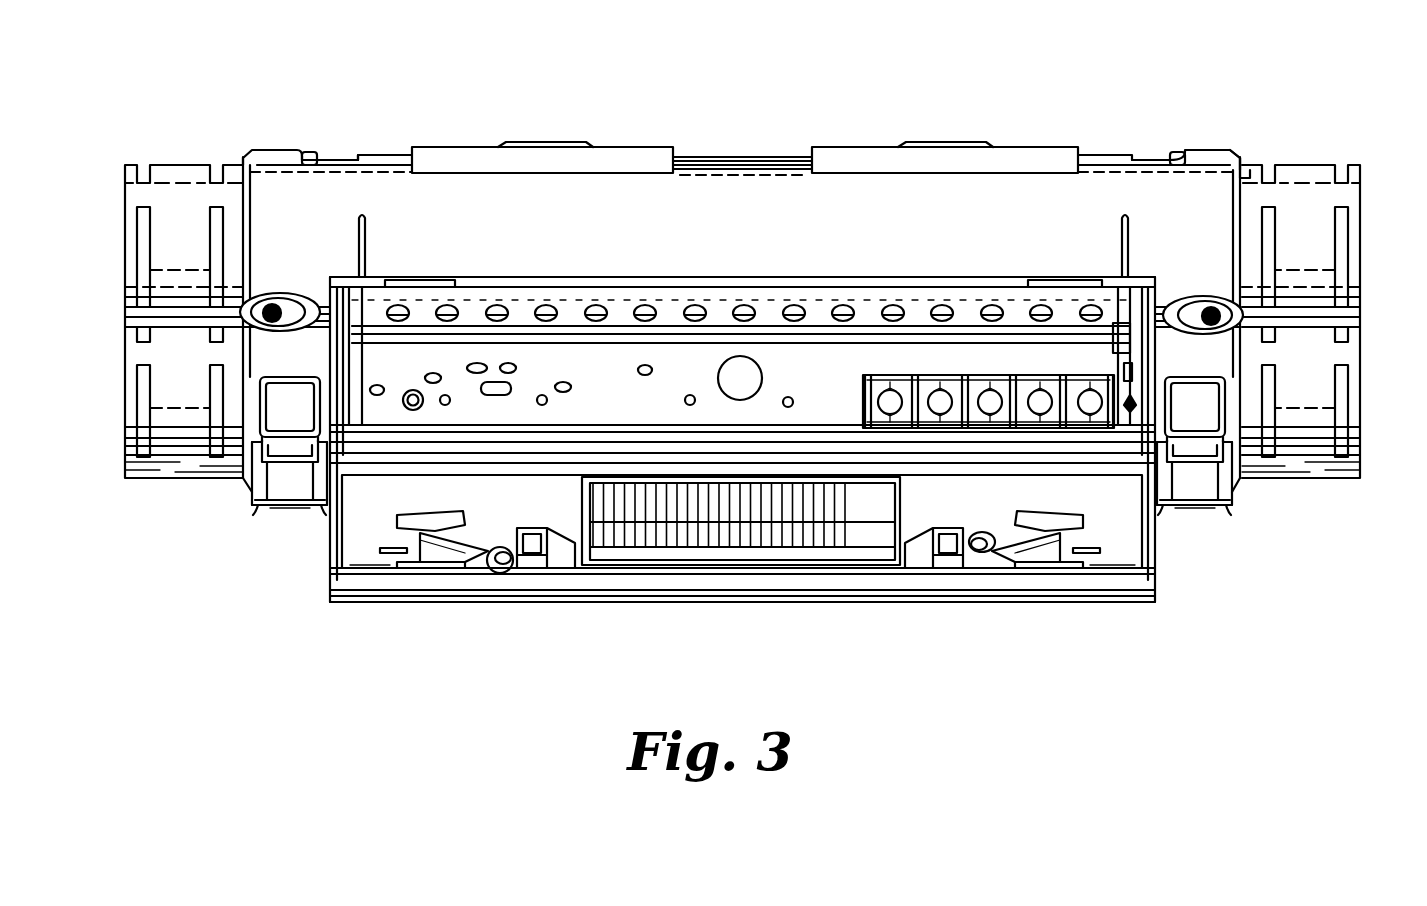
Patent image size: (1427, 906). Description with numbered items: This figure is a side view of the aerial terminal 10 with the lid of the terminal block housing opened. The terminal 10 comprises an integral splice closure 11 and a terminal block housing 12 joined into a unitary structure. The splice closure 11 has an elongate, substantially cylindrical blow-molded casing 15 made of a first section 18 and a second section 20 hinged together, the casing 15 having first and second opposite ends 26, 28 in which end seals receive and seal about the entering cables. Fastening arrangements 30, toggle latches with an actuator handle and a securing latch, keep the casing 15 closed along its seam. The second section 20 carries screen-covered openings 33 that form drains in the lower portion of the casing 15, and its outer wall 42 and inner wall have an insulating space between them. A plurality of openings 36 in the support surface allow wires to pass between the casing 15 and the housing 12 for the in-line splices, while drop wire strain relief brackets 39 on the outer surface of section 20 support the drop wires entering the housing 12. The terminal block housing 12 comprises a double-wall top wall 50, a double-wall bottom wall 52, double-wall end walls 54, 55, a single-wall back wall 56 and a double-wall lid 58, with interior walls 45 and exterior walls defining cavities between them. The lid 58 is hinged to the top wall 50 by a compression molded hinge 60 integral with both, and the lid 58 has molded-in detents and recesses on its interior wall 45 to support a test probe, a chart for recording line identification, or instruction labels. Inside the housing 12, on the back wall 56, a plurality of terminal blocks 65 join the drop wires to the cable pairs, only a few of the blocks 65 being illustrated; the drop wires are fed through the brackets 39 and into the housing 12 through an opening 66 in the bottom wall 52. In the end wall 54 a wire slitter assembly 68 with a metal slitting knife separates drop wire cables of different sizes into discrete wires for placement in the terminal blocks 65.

The terminal 10 is at (1091, 138).
The splice closure 11 is at (1248, 170).
The terminal block housing 12 is at (358, 596).
The casing 15 is at (388, 148).
The first section 18 is at (732, 170).
The second section 20 is at (238, 482).
The first end 26 is at (1366, 190).
The second end 28 is at (125, 183).
The fastening arrangement 30 is at (253, 513).
The openings 33 is at (278, 308).
The openings 36 is at (757, 366).
The drop wire strain relief brackets 39 is at (367, 228).
The outer wall 42 is at (797, 170).
The interior walls 45 is at (562, 305).
The top wall 50 is at (595, 440).
The bottom wall 52 is at (580, 598).
The end wall 54 is at (1150, 353).
The end wall 55 is at (330, 351).
The back wall 56 is at (670, 362).
The lid 58 is at (492, 590).
The hinge 60 is at (527, 455).
The terminal blocks 65 is at (988, 386).
The opening 66 is at (645, 318).
The wire slitter assembly 68 is at (1131, 412).